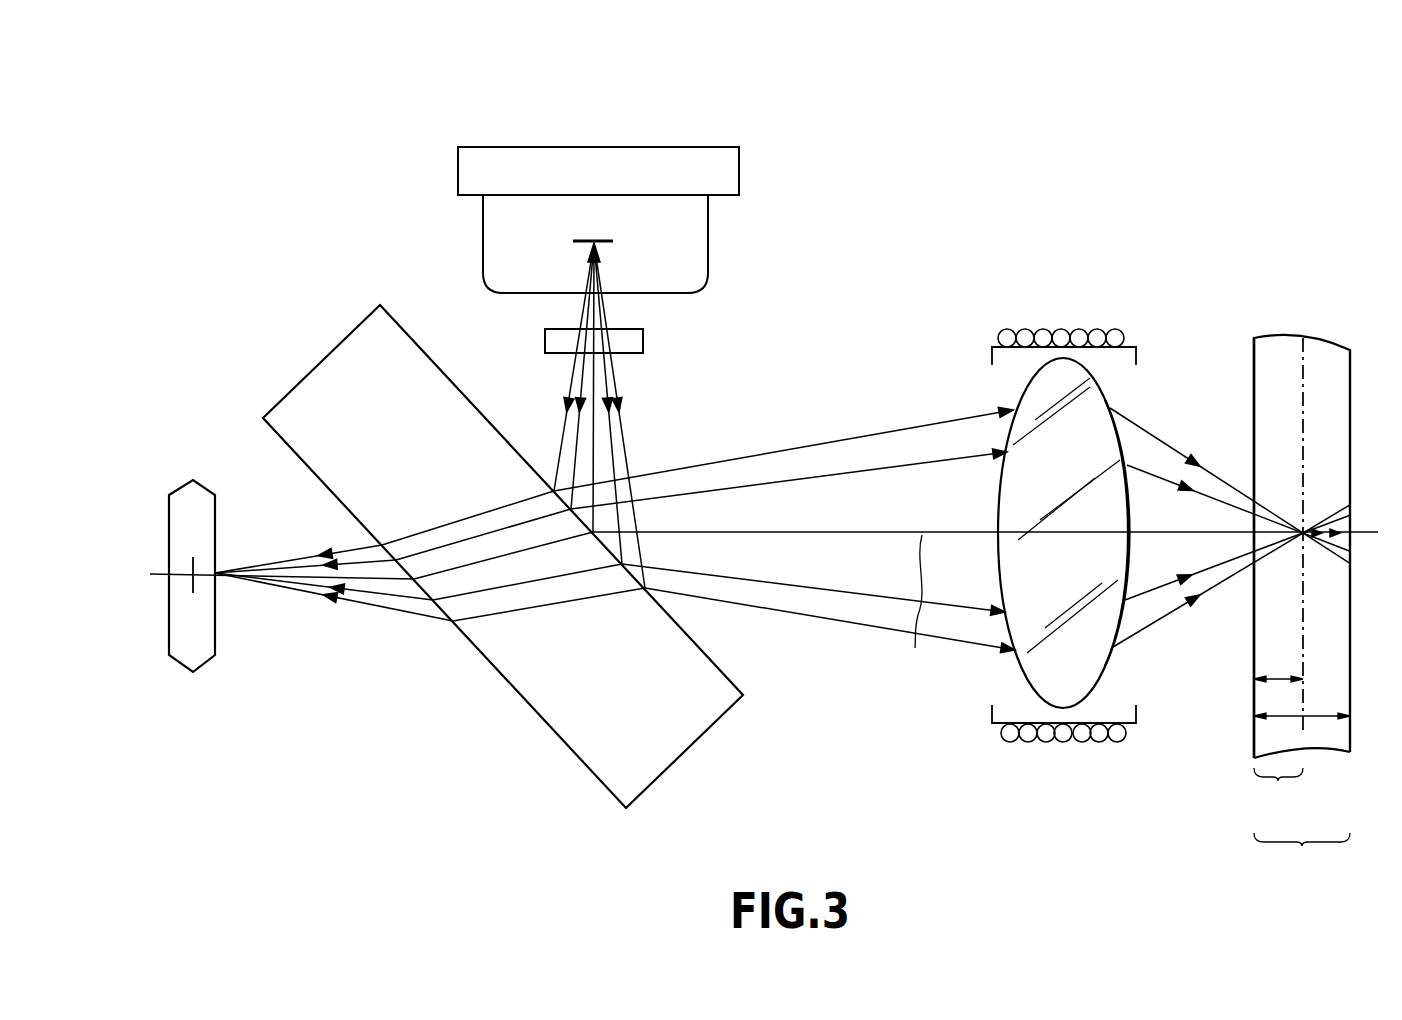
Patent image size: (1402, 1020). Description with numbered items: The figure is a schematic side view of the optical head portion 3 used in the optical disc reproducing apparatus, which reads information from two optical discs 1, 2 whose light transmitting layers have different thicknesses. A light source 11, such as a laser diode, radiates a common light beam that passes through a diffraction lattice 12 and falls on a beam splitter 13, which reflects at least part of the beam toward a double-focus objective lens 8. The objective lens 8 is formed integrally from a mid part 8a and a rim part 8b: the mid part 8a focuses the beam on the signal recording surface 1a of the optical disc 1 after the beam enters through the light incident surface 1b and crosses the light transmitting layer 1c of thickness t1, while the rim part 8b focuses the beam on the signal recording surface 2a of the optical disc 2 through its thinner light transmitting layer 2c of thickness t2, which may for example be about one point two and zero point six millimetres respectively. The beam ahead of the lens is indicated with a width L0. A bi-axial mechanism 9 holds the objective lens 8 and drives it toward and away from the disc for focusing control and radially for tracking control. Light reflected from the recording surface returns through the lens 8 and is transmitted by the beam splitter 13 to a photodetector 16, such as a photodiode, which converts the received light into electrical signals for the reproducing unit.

The optical head portion 3 is at (933, 146).
The light source 11 is at (708, 233).
The diffraction lattice 12 is at (638, 353).
The beam splitter 13 is at (745, 692).
The photodetector 16 is at (180, 487).
The double-focus objective lens 8 is at (1017, 402).
The mid part 8a is at (1127, 462).
The rim part 8b is at (1111, 408).
The bi-axial mechanism 9 is at (991, 347).
The beam width L0 is at (918, 611).
The optical disc 1 is at (1350, 384).
The optical disc 2 is at (1278, 548).
The signal recording surface 1a is at (1322, 342).
The signal recording surface 2a is at (1303, 357).
The light incident surface 1b is at (1253, 363).
The light transmitting layer 1c is at (1302, 855).
The light transmitting layer 2c is at (1278, 790).
The thickness t1 is at (1302, 702).
The thickness t2 is at (1278, 665).